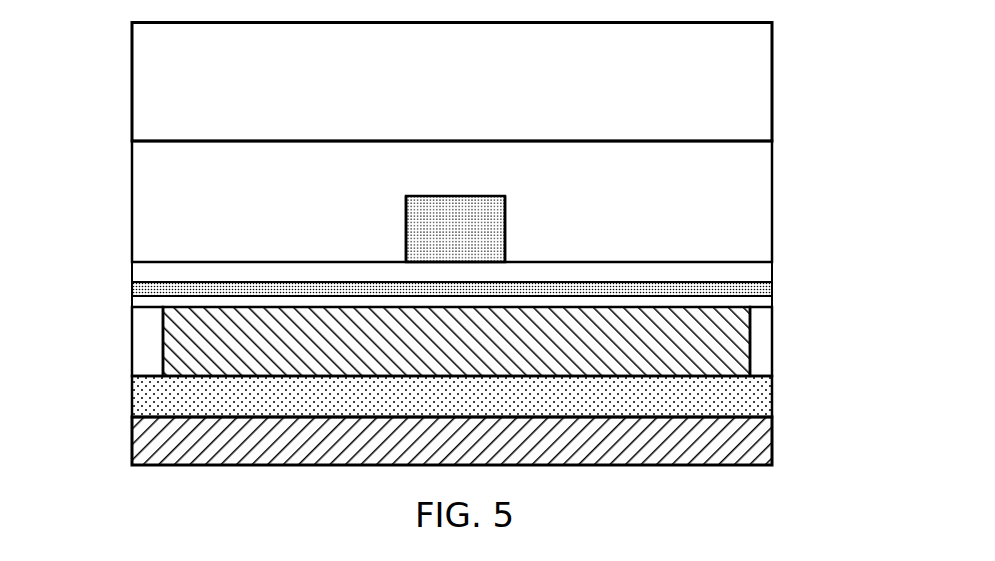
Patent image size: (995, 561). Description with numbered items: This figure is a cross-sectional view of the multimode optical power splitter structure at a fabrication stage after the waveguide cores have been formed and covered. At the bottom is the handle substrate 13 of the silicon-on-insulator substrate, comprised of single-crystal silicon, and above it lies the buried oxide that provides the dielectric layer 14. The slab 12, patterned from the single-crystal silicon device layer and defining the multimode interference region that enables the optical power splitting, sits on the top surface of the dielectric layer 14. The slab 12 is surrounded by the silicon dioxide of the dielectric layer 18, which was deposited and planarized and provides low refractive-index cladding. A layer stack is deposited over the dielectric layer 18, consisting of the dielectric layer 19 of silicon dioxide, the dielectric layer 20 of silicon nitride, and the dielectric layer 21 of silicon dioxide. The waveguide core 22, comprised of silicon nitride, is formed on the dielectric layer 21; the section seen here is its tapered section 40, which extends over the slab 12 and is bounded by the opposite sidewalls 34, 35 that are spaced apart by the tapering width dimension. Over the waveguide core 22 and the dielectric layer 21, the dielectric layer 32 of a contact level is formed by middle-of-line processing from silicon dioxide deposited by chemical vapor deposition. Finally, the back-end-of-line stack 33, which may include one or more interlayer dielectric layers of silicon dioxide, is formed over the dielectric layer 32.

The slab 12 is at (665, 327).
The handle substrate 13 is at (163, 452).
The dielectric layer 14 is at (162, 402).
The dielectric layer 18 is at (148, 345).
The dielectric layer 19 is at (152, 307).
The dielectric layer 20 is at (758, 288).
The dielectric layer 21 is at (152, 275).
The waveguide core 22 is at (343, 212).
The dielectric layer 32 is at (728, 200).
The back-end-of-line stack 33 is at (173, 73).
The sidewall 34 is at (406, 227).
The sidewall 35 is at (505, 227).
The tapered section 40 is at (477, 245).